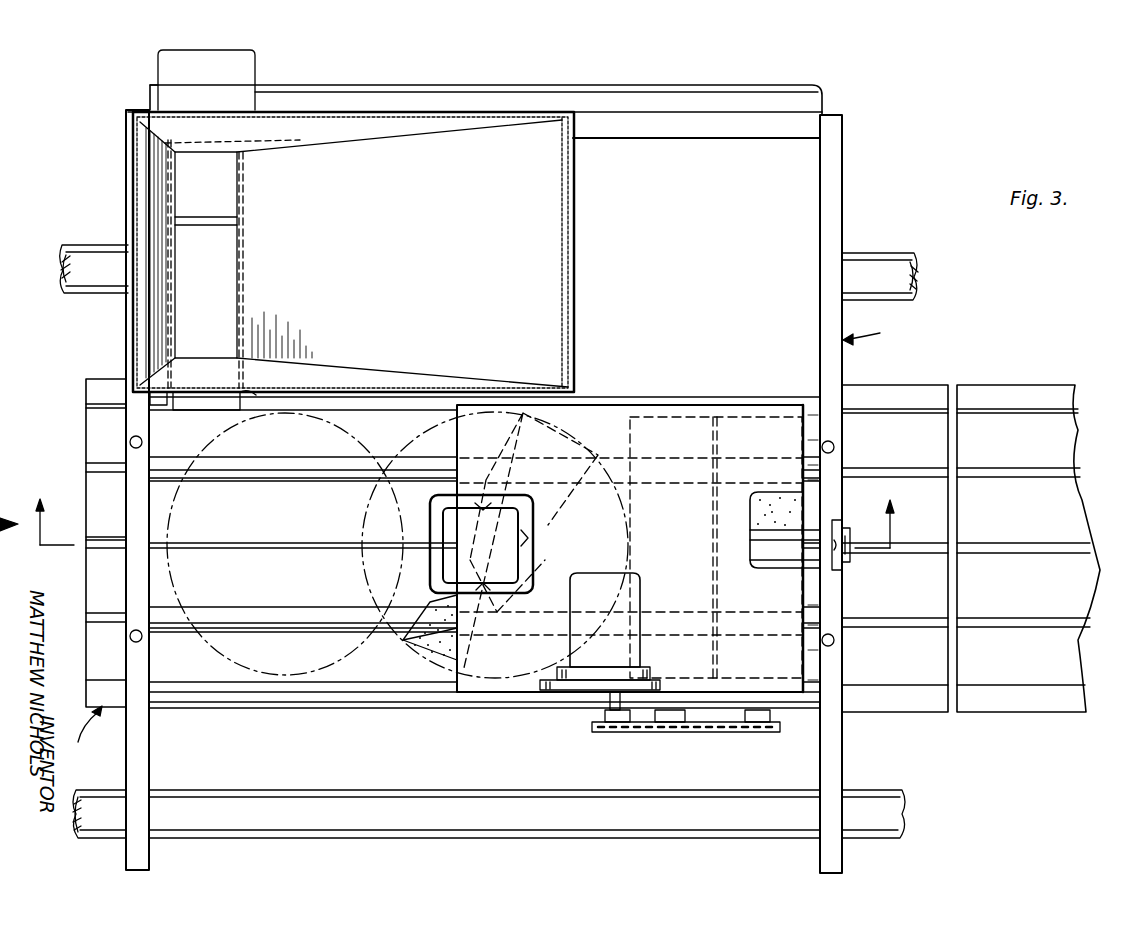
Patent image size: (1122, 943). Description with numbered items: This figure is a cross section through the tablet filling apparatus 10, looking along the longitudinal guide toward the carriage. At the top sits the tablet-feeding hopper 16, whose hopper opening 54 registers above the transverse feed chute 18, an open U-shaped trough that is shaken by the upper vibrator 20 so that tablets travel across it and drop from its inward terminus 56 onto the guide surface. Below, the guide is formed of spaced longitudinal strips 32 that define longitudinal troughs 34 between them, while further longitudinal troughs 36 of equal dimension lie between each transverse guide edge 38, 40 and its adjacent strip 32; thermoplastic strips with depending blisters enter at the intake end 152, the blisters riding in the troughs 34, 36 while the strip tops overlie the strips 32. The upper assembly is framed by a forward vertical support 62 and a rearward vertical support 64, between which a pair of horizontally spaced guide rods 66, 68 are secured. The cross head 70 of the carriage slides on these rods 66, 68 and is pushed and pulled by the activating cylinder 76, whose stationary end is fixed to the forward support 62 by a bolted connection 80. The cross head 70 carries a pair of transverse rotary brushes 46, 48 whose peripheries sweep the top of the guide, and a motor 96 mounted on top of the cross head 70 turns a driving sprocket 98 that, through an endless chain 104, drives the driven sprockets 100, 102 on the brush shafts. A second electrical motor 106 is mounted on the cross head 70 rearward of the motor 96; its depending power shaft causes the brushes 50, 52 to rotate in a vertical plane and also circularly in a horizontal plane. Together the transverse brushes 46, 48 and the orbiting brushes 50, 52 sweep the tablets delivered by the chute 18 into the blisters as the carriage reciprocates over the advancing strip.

The tablet filling apparatus 10 is at (852, 200).
The tablet-feeding hopper 16 is at (548, 186).
The transverse feed chute 18 is at (200, 395).
The upper vibrator 20 is at (238, 73).
The longitudinal strips 32 is at (90, 462).
The longitudinal troughs 34 is at (98, 501).
The longitudinal troughs 36 is at (98, 429).
The transverse guide edge 38 is at (98, 691).
The transverse guide edge 40 is at (108, 378).
The transverse rotary brush 46 is at (792, 520).
The transverse rotary brush 48 is at (681, 422).
The brush 50 is at (412, 640).
The brush 52 is at (565, 492).
The hopper opening 54 is at (232, 206).
The inward terminus 56 is at (207, 413).
The forward vertical support 62 is at (833, 380).
The rearward vertical support 64 is at (138, 410).
The guide rod 66 is at (306, 470).
The guide rod 68 is at (296, 612).
The cross head 70 is at (601, 410).
The activating cylinder 76 is at (783, 556).
The bolted connection 80 is at (848, 565).
The motor 96 is at (628, 582).
The driving sprocket 98 is at (605, 714).
The driven sprocket 100 is at (758, 727).
The driven sprocket 102 is at (664, 727).
The drive chain 104 is at (706, 730).
The second electrical motor 106 is at (532, 557).
The intake end 152 is at (86, 560).